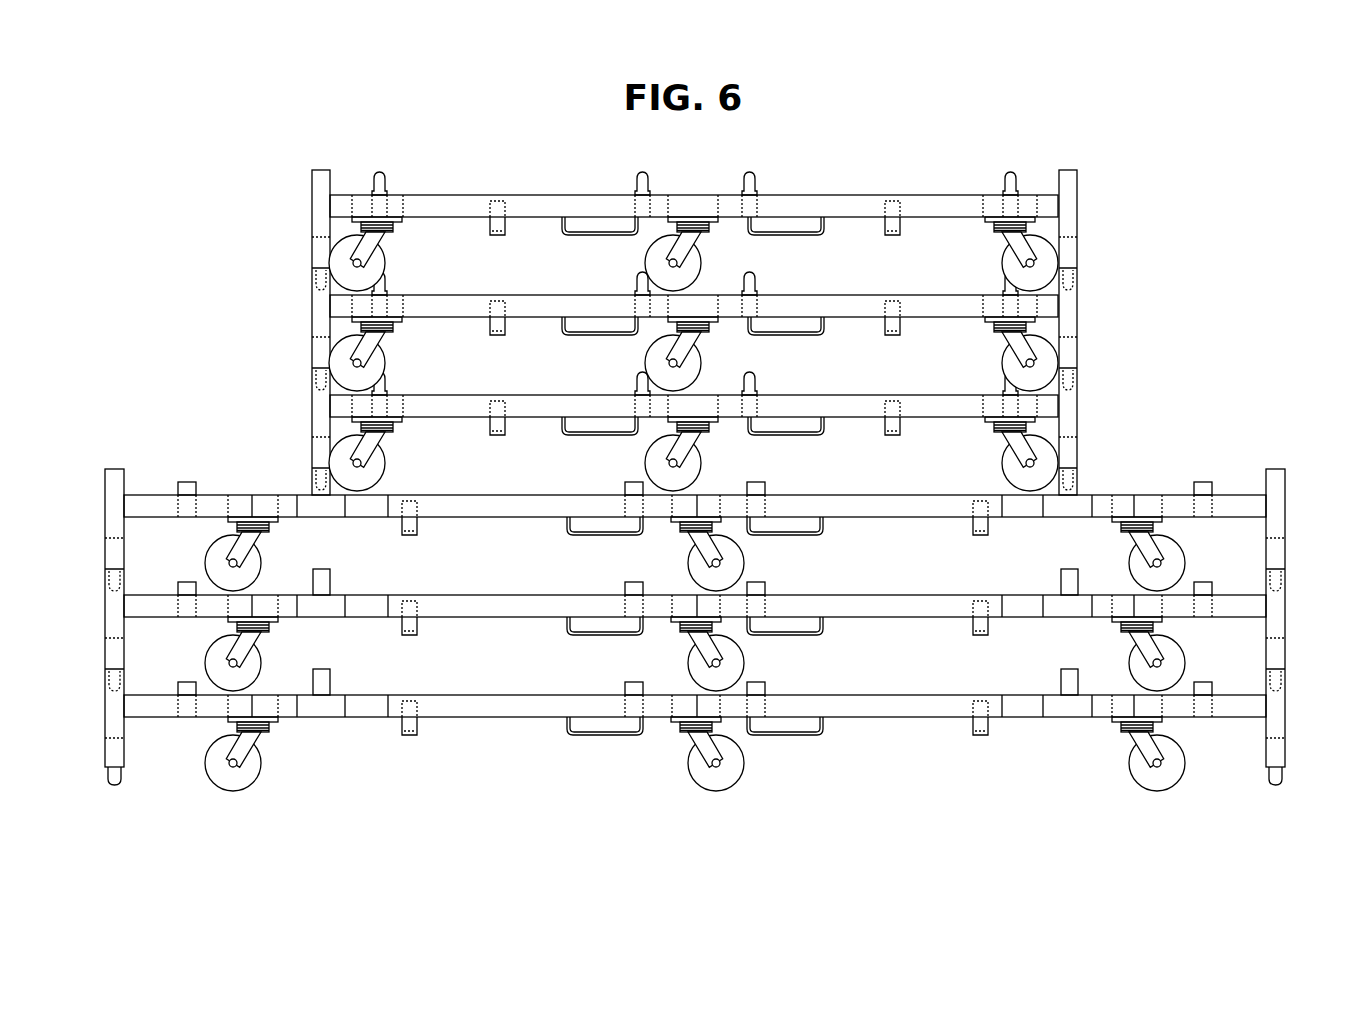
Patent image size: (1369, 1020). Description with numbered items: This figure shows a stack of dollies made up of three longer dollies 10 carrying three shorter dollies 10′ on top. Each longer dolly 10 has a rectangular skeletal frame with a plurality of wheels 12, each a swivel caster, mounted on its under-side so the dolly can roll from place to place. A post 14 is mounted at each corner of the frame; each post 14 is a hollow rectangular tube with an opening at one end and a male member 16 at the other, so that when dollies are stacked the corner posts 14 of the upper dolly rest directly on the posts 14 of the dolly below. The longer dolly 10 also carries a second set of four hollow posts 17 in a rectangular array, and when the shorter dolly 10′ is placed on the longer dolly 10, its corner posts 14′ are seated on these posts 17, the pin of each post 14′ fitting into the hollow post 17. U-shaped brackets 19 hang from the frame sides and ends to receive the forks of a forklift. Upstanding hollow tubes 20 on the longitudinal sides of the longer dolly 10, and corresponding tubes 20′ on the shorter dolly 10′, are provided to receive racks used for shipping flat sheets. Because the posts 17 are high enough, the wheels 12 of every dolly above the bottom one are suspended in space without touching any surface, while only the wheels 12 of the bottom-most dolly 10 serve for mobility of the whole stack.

The dolly 10 is at (1098, 458).
The shorter dolly 10′ is at (907, 156).
The wheel 12 is at (378, 266).
The post 14 is at (115, 512).
The corner post 14′ is at (318, 208).
The male member 16 is at (120, 778).
The post 17 is at (330, 582).
The U-shaped bracket 19 is at (582, 235).
The hollow tube 20 is at (187, 480).
The hollow tube 20′ is at (388, 176).